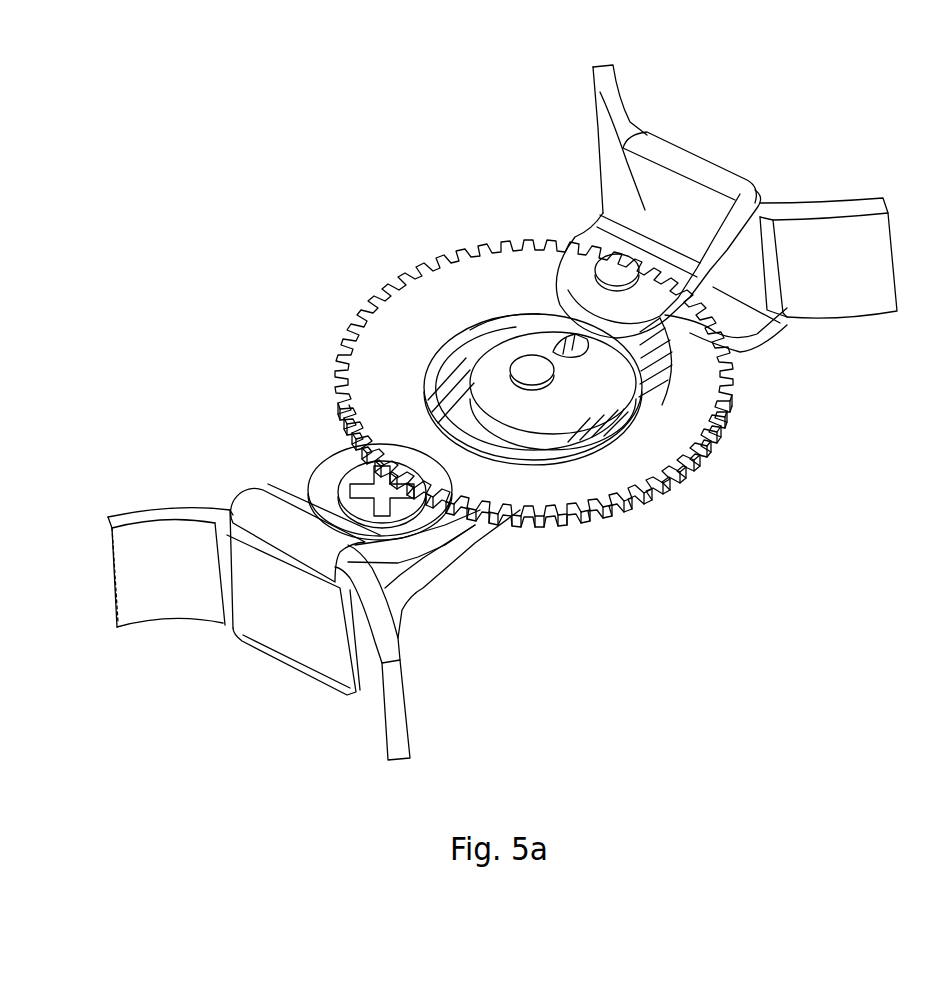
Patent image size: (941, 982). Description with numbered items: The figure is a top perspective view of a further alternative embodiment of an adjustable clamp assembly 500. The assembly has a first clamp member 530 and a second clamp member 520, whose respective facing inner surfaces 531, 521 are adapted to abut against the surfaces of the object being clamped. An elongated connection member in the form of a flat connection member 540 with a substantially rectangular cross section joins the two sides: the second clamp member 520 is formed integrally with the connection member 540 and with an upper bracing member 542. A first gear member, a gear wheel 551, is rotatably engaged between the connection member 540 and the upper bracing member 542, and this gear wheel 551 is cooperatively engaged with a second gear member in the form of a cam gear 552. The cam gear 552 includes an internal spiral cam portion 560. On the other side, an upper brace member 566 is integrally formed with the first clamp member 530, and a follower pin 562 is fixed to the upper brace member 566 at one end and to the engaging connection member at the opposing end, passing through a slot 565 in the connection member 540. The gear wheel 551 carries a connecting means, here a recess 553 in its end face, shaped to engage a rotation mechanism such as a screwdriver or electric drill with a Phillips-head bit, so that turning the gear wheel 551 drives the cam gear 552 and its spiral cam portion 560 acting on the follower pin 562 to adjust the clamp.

The clamp assembly 500 is at (760, 557).
The second clamp member 520 is at (393, 717).
The inner surface 521 is at (413, 675).
The first clamp member 530 is at (600, 87).
The inner surface 531 is at (850, 280).
The connection member 540 is at (467, 535).
The upper bracing member 542 is at (295, 507).
The gear wheel 551 is at (427, 560).
The cam gear 552 is at (383, 330).
The recess 553 is at (350, 478).
The internal spiral cam portion 560 is at (463, 353).
The follower pin 562 is at (617, 270).
The slot 565 is at (567, 347).
The upper brace member 566 is at (643, 207).